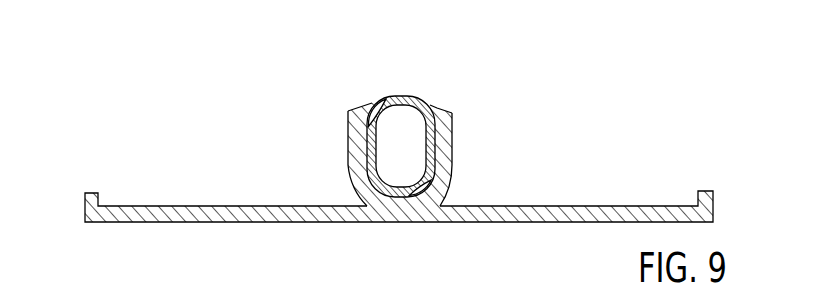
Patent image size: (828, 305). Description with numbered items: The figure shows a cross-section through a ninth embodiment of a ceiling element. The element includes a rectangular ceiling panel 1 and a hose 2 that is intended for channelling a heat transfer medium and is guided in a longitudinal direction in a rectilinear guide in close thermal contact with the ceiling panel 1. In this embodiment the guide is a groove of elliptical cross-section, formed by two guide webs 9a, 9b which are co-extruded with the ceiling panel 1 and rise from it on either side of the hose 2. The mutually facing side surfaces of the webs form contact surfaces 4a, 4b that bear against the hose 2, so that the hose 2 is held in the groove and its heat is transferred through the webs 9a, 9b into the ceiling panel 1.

The ceiling panel 1 is at (622, 206).
The hose 2 is at (397, 96).
The contact surface 4a is at (355, 145).
The contact surface 4b is at (446, 160).
The guide web 9a is at (356, 121).
The guide web 9b is at (449, 116).